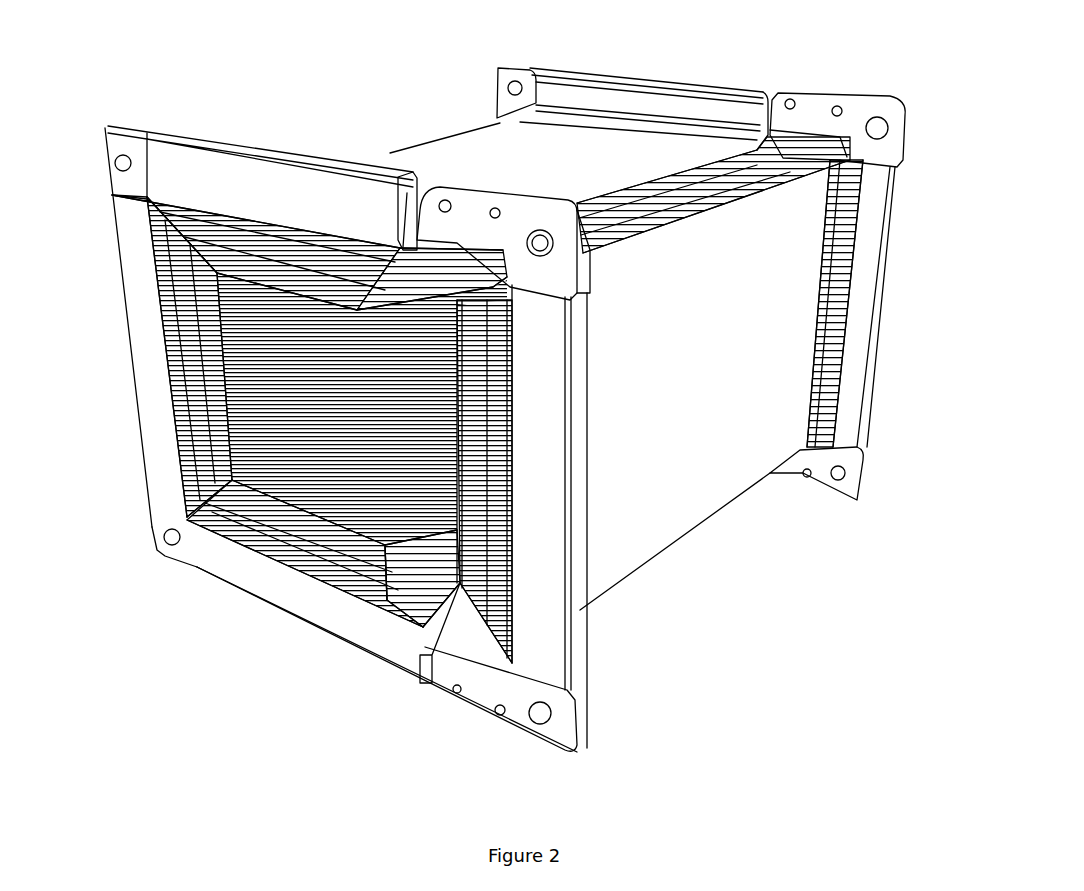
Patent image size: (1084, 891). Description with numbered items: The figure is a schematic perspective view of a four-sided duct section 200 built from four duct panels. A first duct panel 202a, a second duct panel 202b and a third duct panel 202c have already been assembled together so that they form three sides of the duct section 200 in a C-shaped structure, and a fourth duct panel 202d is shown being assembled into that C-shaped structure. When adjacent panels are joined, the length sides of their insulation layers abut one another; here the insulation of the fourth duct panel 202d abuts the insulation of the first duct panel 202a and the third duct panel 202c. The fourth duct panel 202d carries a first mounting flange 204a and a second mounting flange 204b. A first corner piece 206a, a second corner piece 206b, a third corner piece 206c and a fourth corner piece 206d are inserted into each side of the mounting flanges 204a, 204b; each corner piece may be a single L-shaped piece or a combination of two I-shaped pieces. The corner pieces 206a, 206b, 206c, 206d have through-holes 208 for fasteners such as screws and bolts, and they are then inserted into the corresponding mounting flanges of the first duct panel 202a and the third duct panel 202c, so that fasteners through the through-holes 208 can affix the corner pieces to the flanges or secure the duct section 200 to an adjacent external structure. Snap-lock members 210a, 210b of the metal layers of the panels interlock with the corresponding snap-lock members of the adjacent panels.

The duct section 200 is at (755, 610).
The first duct panel 202a is at (305, 565).
The second duct panel 202b is at (178, 365).
The third duct panel 202c is at (265, 265).
The fourth duct panel 202d is at (485, 513).
The first mounting flange 204a is at (553, 497).
The second mounting flange 204b is at (853, 330).
The first corner piece 206a is at (557, 720).
The second corner piece 206b is at (525, 215).
The third corner piece 206c is at (853, 467).
The fourth corner piece 206d is at (888, 118).
The through-holes 208 is at (537, 720).
The snap-lock member 210a is at (453, 598).
The snap-lock member 210b is at (615, 193).